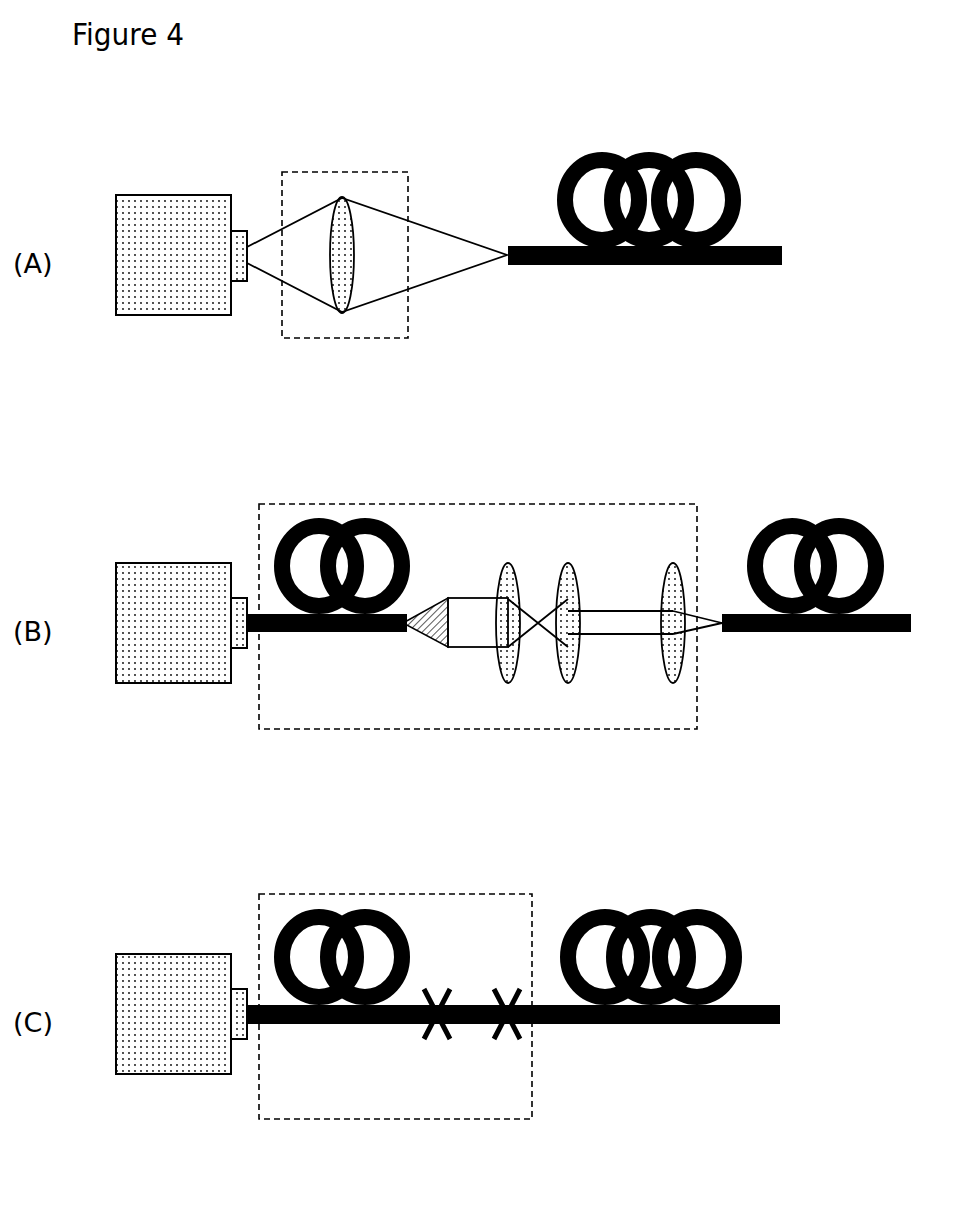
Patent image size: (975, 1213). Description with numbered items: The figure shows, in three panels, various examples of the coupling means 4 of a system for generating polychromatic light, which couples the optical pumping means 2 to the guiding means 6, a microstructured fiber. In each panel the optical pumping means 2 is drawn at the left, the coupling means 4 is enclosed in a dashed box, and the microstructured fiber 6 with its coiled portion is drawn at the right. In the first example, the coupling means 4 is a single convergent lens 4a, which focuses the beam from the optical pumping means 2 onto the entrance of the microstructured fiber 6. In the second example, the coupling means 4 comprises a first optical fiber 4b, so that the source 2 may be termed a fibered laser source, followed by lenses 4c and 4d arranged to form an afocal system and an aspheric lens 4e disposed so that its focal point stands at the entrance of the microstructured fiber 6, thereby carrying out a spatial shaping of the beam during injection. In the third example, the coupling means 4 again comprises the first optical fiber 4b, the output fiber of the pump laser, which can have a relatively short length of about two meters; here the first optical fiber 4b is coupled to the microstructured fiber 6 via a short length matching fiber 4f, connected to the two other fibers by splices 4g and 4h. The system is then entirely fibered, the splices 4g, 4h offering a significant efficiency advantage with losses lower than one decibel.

The optical pumping means 2 is at (194, 297).
The coupling means 4 is at (366, 327).
The single convergent lens 4a is at (342, 232).
The first optical fiber 4b is at (367, 518).
The lens 4c is at (508, 565).
The lens 4d is at (568, 565).
The aspheric lens 4e is at (673, 565).
The short length matching fiber 4f is at (473, 1005).
The splice 4g is at (437, 1014).
The splice 4h is at (507, 1014).
The guiding means 6 is at (665, 265).